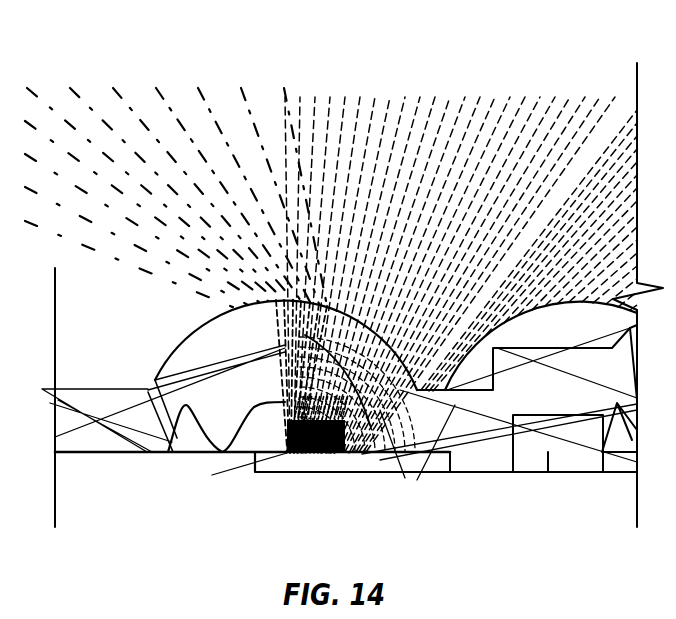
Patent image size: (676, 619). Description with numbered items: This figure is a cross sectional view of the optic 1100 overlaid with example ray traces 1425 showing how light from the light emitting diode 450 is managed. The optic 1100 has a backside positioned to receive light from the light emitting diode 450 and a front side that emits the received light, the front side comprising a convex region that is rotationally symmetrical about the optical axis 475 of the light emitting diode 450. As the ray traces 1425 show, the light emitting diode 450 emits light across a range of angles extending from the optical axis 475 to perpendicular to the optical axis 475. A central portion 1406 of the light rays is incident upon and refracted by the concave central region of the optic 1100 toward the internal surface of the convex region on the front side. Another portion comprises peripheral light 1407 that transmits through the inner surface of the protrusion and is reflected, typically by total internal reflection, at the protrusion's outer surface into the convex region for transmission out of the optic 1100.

The optical axis 475 is at (133, 62).
The ray traces 1425 is at (473, 80).
The optic 1100 is at (157, 318).
The central portion of the light rays 1406 is at (268, 386).
The light emitting diode 450 is at (287, 462).
The peripheral light 1407 is at (372, 440).